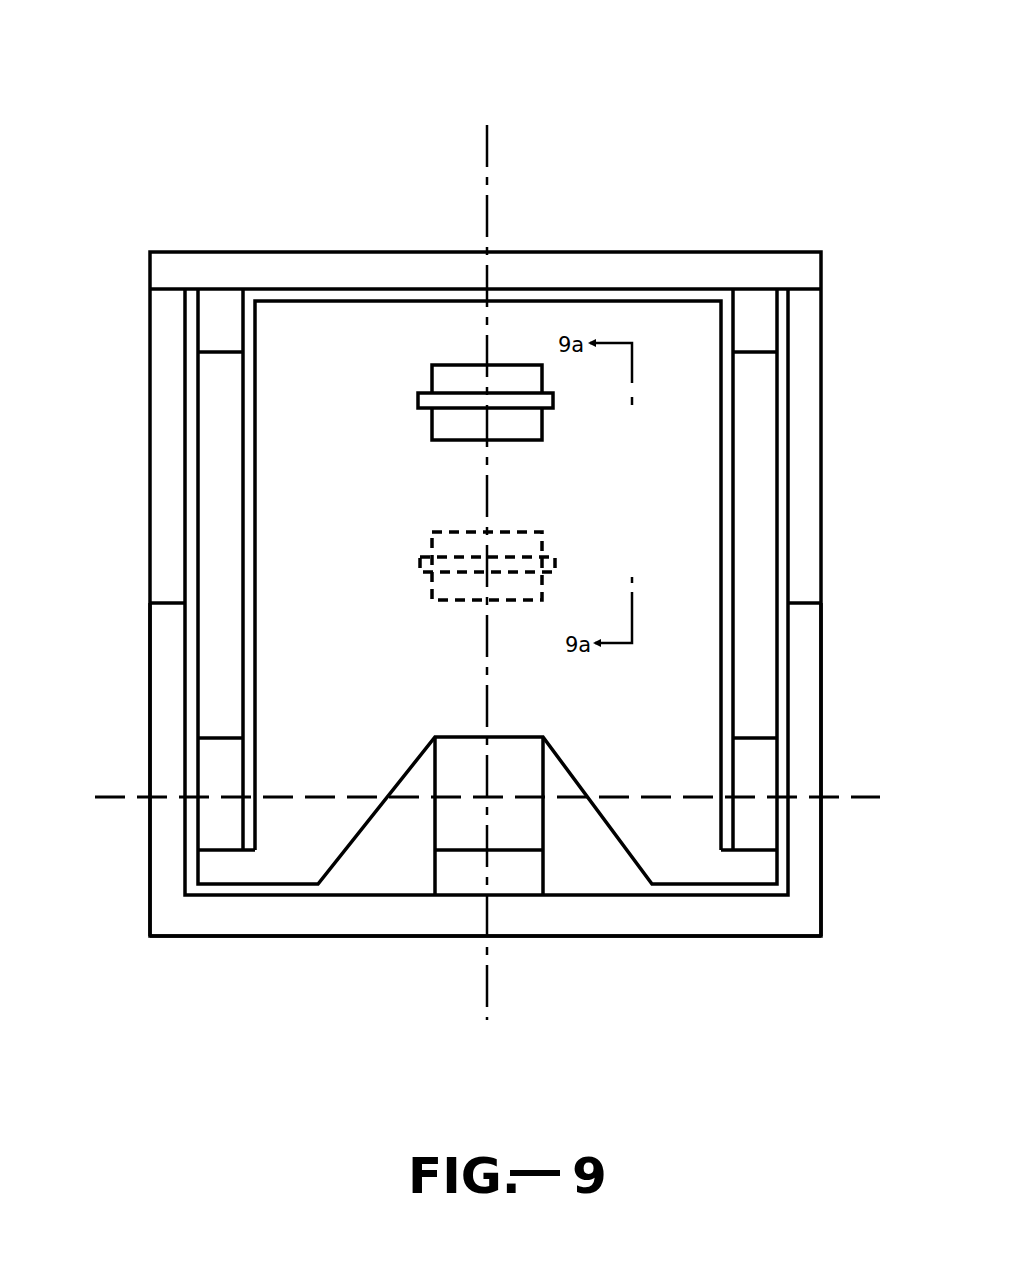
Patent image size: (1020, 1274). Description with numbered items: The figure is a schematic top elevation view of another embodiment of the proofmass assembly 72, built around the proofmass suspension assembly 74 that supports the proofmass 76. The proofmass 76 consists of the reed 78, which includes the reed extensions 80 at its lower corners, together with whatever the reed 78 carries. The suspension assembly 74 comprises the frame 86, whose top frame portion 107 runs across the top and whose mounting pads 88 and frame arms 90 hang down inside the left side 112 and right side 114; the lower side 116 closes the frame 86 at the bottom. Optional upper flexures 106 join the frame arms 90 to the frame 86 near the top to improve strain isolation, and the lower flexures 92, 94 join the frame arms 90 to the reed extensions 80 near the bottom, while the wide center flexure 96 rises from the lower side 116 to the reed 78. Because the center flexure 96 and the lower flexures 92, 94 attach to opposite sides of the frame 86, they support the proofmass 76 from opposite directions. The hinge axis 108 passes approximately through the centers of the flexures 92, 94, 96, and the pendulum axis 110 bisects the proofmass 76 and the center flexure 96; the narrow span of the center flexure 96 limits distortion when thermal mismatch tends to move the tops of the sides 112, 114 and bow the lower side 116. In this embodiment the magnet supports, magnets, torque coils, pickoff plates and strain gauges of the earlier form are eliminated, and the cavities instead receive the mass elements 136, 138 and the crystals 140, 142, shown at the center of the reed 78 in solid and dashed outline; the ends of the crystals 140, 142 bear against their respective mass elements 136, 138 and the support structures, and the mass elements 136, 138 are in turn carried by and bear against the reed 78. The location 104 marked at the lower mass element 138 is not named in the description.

The proofmass assembly 72 is at (257, 62).
The proofmass suspension assembly 74 is at (202, 127).
The proofmass 76 is at (151, 167).
The reed 78 is at (272, 560).
The reed extensions 80 is at (225, 880).
The frame 86 is at (672, 212).
The mounting pads 88 is at (163, 425).
The frame arms 90 is at (208, 498).
The lower flexure 92 is at (208, 777).
The lower flexure 94 is at (765, 768).
The center flexure 96 is at (535, 828).
The sensor location 104 is at (488, 602).
The upper flexures 106 is at (200, 333).
The top frame portion 107 is at (580, 266).
The hinge axis 108 is at (118, 797).
The pendulum axis 110 is at (487, 143).
The left side of frame 112 is at (163, 703).
The right side of frame 114 is at (812, 667).
The lower side of frame 116 is at (580, 937).
The mass element 136 is at (522, 442).
The mass element 138 is at (536, 598).
The crystal 140 is at (425, 407).
The crystal 142 is at (420, 568).